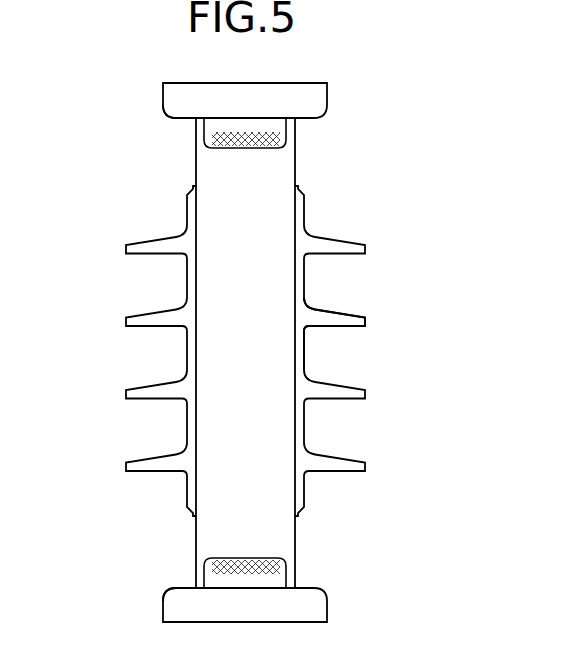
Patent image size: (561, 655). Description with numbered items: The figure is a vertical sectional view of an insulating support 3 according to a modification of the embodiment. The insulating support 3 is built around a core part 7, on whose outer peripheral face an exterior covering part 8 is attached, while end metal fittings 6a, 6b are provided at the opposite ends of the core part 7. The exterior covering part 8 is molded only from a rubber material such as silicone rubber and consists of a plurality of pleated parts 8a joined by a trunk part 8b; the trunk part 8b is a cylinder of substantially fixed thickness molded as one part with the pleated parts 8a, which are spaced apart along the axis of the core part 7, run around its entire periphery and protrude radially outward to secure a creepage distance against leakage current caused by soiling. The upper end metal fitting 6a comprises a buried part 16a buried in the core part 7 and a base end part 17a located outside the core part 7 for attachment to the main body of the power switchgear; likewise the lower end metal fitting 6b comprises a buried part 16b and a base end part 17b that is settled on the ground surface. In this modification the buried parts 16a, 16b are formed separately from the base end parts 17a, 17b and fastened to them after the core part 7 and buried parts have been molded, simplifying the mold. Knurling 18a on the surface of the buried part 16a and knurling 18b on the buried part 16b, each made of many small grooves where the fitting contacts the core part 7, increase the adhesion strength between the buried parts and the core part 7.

The insulating support 3 is at (87, 293).
The end metal fitting 6a is at (327, 97).
The end metal fitting 6b is at (330, 601).
The core part 7 is at (291, 549).
The exterior covering part 8 is at (366, 246).
The pleated parts 8a is at (353, 317).
The trunk part 8b is at (304, 351).
The buried part 16a is at (205, 134).
The buried part 16b is at (205, 580).
The base end part 17a is at (176, 104).
The base end part 17b is at (176, 608).
The knurling 18a is at (264, 137).
The knurling 18b is at (247, 562).